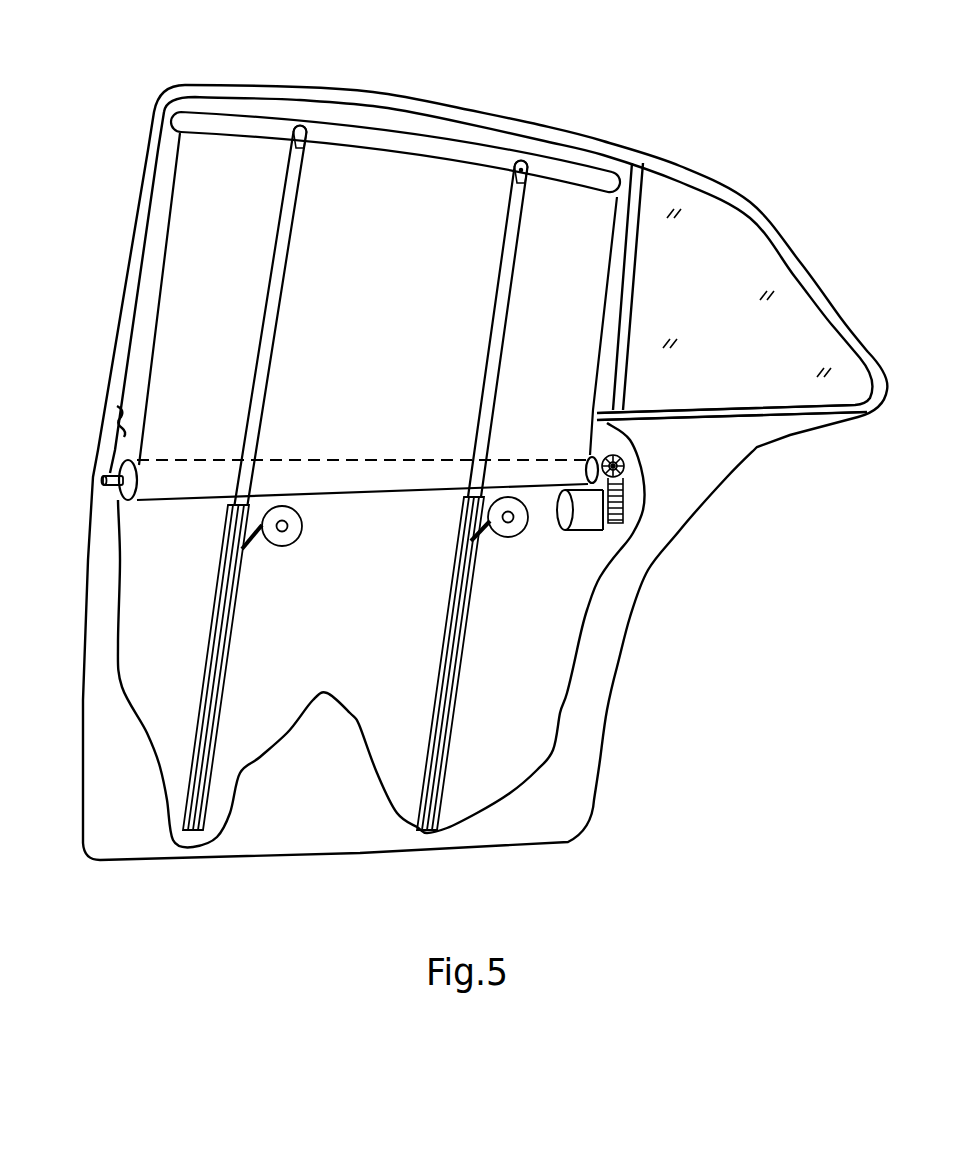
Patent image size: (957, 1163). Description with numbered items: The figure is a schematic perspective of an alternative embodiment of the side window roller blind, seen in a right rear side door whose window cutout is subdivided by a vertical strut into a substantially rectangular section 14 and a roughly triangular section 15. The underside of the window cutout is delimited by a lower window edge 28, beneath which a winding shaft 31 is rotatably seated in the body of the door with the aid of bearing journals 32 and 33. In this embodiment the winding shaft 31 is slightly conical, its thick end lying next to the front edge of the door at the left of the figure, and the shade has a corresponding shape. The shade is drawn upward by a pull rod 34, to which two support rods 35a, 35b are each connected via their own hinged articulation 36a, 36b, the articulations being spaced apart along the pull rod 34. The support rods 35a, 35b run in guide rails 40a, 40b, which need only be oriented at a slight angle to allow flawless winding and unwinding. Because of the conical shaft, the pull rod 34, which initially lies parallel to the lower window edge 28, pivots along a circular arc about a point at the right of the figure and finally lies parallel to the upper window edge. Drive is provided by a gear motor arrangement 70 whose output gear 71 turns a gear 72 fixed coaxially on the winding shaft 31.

The substantially rectangular section 14 is at (493, 145).
The roughly triangular section 15 is at (726, 250).
The lower window edge 28 is at (697, 405).
The winding shaft 31 is at (122, 497).
The bearing journal 32 is at (103, 481).
The bearing journal 33 is at (627, 470).
The pull rod 34 is at (234, 128).
The support rod 35a is at (281, 316).
The support rod 35b is at (508, 320).
The hinged articulation 36a is at (307, 135).
The hinged articulation 36b is at (528, 165).
The guide rail 40a is at (233, 652).
The guide rail 40b is at (460, 638).
The gear motor arrangement 70 is at (694, 540).
The output gear 71 is at (625, 515).
The gear 72 is at (620, 458).